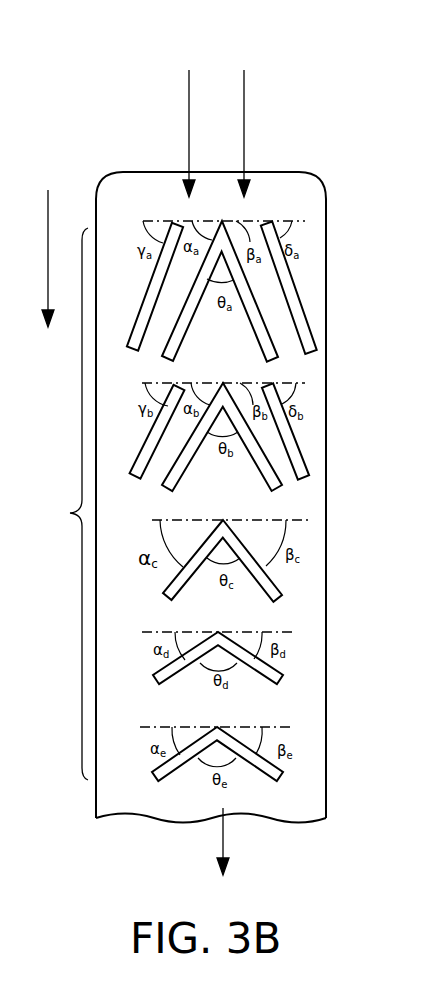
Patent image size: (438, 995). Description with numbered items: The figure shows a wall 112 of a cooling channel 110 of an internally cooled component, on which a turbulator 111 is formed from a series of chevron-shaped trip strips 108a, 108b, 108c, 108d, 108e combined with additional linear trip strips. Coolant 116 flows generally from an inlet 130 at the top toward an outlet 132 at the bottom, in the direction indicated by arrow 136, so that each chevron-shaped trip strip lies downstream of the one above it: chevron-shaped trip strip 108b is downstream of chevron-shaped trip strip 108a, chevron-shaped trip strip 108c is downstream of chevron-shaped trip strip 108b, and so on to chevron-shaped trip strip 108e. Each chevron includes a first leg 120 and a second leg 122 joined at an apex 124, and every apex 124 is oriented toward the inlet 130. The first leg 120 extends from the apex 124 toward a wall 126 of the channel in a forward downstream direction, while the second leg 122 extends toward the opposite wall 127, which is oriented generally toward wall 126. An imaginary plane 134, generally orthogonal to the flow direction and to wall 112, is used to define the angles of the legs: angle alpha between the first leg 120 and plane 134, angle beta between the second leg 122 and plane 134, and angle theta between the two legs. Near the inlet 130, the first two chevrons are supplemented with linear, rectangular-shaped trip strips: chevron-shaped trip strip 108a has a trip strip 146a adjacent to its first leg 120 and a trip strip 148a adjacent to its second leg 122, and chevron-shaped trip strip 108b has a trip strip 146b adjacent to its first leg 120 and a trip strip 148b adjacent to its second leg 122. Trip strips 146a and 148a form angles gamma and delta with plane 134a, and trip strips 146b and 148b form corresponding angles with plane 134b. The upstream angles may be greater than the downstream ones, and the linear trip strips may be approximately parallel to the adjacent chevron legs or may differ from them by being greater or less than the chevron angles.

The chevron-shaped trip strip 108a is at (292, 340).
The chevron-shaped trip strip 108b is at (293, 484).
The chevron-shaped trip strip 108c is at (297, 583).
The chevron-shaped trip strip 108d is at (307, 675).
The chevron-shaped trip strip 108e is at (303, 771).
The cooling channel 110 is at (140, 192).
The turbulator 111 is at (65, 504).
The wall 112 is at (126, 253).
The coolant 116 is at (220, 122).
The first leg 120 is at (172, 348).
The second leg 122 is at (261, 343).
The apex 124 is at (223, 221).
The wall 126 is at (97, 788).
The wall 127 is at (323, 800).
The inlet 130 is at (268, 177).
The outlet 132 is at (227, 855).
The imaginary plane 134 is at (302, 520).
The plane 134a is at (305, 221).
The plane 134b is at (305, 383).
The arrow 136 is at (50, 249).
The trip strip 146a is at (158, 283).
The trip strip 146b is at (142, 458).
The trip strip 148a is at (283, 278).
The trip strip 148b is at (293, 448).